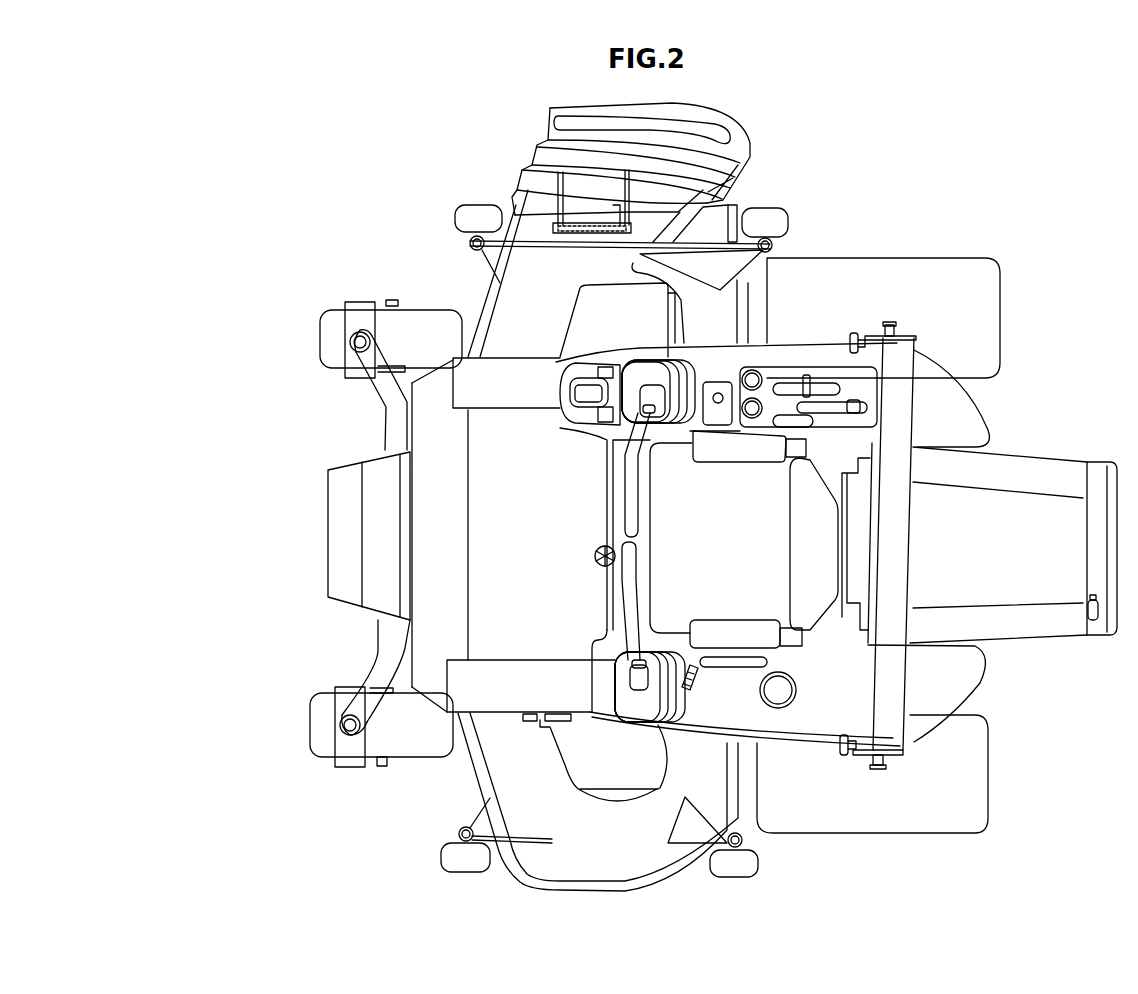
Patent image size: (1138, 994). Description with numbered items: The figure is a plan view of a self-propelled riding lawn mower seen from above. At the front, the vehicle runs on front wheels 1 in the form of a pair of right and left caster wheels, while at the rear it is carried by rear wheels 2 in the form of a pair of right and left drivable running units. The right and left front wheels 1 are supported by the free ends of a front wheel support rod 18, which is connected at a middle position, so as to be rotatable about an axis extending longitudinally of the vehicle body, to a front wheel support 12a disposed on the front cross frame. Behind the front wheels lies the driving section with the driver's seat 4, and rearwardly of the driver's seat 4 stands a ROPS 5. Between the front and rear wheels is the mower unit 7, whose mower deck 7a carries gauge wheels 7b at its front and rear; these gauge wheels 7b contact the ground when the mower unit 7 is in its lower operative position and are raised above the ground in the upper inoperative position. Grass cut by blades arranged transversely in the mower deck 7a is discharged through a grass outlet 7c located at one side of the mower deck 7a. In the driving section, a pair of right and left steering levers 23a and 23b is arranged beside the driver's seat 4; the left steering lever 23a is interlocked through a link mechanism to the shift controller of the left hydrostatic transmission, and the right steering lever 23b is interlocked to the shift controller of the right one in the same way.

The front wheels 1 is at (322, 341).
The rear wheels 2 is at (996, 319).
The driver's seat 4 is at (653, 522).
The ROPS 5 is at (922, 537).
The mower unit 7 is at (474, 305).
The mower deck 7a is at (500, 752).
The gauge wheels 7b is at (466, 222).
The grass outlet 7c is at (755, 128).
The front wheel support 12a is at (318, 536).
The front wheel support rod 18 is at (370, 630).
The left steering lever 23a is at (624, 597).
The right steering lever 23b is at (632, 482).